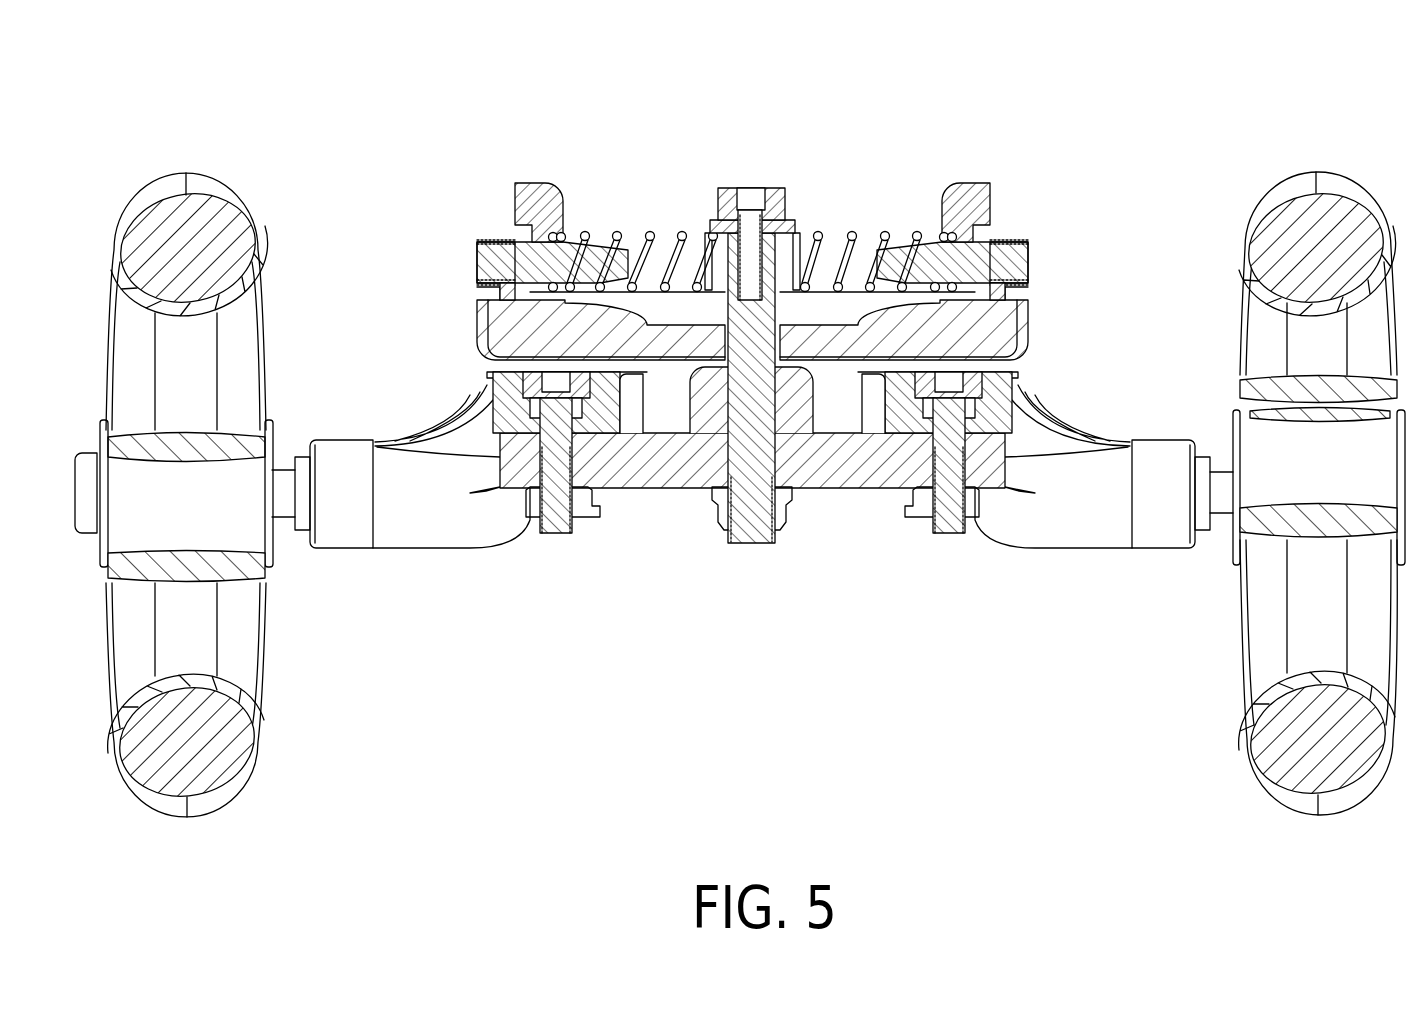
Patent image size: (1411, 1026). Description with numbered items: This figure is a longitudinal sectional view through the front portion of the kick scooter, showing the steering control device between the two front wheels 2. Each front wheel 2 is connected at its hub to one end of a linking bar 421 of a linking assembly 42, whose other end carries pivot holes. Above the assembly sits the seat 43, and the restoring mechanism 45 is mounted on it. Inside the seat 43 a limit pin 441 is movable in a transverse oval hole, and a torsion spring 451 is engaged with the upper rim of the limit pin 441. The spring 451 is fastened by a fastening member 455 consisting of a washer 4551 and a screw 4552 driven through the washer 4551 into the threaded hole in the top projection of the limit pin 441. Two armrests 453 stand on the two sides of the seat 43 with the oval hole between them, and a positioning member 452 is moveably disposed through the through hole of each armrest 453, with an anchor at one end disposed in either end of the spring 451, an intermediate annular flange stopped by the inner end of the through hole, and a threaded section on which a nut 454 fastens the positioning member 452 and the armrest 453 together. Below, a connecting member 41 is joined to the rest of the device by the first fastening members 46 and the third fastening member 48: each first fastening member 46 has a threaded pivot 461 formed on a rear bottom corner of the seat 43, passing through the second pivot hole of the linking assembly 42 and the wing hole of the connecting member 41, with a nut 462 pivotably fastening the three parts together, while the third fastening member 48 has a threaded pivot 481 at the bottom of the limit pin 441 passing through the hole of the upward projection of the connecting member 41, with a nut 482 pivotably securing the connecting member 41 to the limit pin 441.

The front wheel 2 is at (173, 185).
The connecting member 41 is at (717, 428).
The linking assembly 42 is at (493, 388).
The linking bar 421 is at (430, 517).
The seat 43 is at (998, 330).
The limit pin 441 is at (800, 270).
The restoring mechanism 45 is at (748, 155).
The torsion spring 451 is at (650, 232).
The positioning member 452 is at (539, 222).
The armrest 453 is at (517, 195).
The nut 454 is at (489, 230).
The fastening member 455 is at (787, 182).
The washer 4551 is at (788, 226).
The screw 4552 is at (750, 204).
The first fastening member 46 is at (752, 549).
The threaded pivot 461 is at (560, 534).
The nut 462 is at (585, 512).
The third fastening member 48 is at (758, 480).
The threaded pivot 481 is at (752, 542).
The nut 482 is at (784, 505).